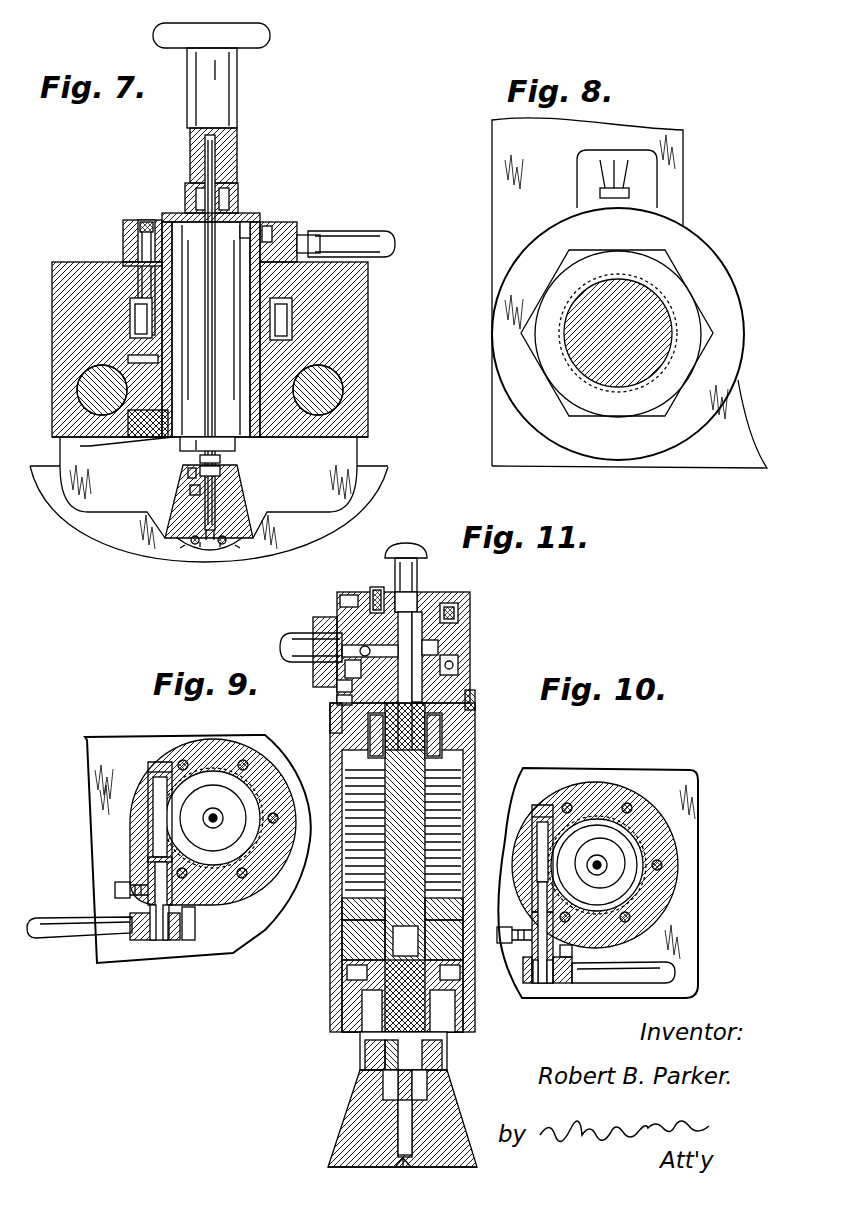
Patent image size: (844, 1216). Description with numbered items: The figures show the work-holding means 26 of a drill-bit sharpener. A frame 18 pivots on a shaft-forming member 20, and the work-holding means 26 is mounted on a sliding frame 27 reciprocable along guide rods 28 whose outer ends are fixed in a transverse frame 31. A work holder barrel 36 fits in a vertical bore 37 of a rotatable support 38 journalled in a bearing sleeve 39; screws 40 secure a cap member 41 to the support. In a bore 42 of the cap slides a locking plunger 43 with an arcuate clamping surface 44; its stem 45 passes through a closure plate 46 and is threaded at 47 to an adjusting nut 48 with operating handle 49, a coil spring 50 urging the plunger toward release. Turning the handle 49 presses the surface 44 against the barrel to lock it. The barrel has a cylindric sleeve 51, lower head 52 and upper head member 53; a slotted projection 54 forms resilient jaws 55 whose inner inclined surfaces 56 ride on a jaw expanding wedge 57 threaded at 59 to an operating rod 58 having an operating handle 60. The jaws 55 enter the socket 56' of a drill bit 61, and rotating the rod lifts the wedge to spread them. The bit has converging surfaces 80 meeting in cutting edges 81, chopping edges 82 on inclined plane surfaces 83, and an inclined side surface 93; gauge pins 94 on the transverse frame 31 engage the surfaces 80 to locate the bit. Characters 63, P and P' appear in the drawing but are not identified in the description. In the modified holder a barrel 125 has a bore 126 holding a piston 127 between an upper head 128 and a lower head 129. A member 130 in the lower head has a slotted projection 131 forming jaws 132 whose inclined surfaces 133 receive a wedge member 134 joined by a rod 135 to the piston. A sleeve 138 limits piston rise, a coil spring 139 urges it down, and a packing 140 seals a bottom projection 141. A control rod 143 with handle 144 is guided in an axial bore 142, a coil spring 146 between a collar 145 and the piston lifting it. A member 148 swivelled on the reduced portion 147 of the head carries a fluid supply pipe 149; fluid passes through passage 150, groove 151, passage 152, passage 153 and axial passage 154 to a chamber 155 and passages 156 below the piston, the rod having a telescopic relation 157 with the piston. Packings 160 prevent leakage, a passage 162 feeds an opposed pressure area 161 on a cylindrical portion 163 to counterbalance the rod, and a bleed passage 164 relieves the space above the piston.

In FIG. 8, the frame 18 is at (693, 445).
In FIG. 8, the shaft-forming member 20 is at (650, 287).
In FIG. 7, the work-holding means 26 is at (288, 222).
In FIG. 9, the work-holding means 26 is at (122, 787).
In FIG. 10, the work-holding means 26 is at (656, 786).
In FIG. 7, the sliding frame 27 is at (368, 281).
In FIG. 9, the sliding frame 27 is at (92, 820).
In FIG. 10, the sliding frame 27 is at (682, 907).
In FIG. 7, the guide rods 28 is at (87, 388).
In FIG. 7, the transverse frame 31 is at (347, 464).
In FIG. 7, the work holder barrel 36 is at (294, 214).
In FIG. 9, the work holder barrel 36 is at (160, 842).
In FIG. 10, the work holder barrel 36 is at (553, 847).
In FIG. 7, the vertical bore 37 is at (318, 238).
In FIG. 7, the rotatable support 38 is at (138, 382).
In FIG. 7, the bearing sleeve 39 is at (150, 410).
In FIG. 7, the screws 40 is at (148, 222).
In FIG. 9, the screws 40 is at (167, 773).
In FIG. 10, the screws 40 is at (552, 870).
In FIG. 7, the cap member 41 is at (125, 238).
In FIG. 9, the cap member 41 is at (163, 757).
In FIG. 10, the cap member 41 is at (677, 817).
In FIG. 9, the bore 42 is at (148, 805).
In FIG. 10, the bore 42 is at (550, 817).
In FIG. 7, the locking clamp or plunger 43 is at (277, 240).
In FIG. 9, the locking clamp or plunger 43 is at (153, 828).
In FIG. 10, the locking clamp or plunger 43 is at (573, 813).
In FIG. 7, the arcuate clamping surface 44 is at (255, 216).
In FIG. 9, the arcuate clamping surface 44 is at (160, 800).
In FIG. 10, the arcuate clamping surface 44 is at (558, 840).
In FIG. 9, the stem 45 is at (153, 925).
In FIG. 10, the stem 45 is at (558, 990).
In FIG. 9, the closure plate 46 is at (135, 938).
In FIG. 10, the closure plate 46 is at (580, 985).
In FIG. 9, the threaded connection 47 is at (167, 940).
In FIG. 10, the threaded connection 47 is at (547, 993).
In FIG. 9, the adjusting nut 48 is at (177, 941).
In FIG. 10, the adjusting nut 48 is at (535, 990).
In FIG. 7, the operating handle 49 is at (388, 234).
In FIG. 9, the operating handle 49 is at (57, 938).
In FIG. 10, the operating handle 49 is at (675, 970).
In FIG. 9, the coil spring 50 is at (127, 873).
In FIG. 10, the coil spring 50 is at (517, 937).
In FIG. 7, the cylindric sleeve 51 is at (118, 451).
In FIG. 7, the lower head 52 is at (187, 440).
In FIG. 9, the lower head 52 is at (223, 855).
In FIG. 10, the lower head 52 is at (640, 840).
In FIG. 7, the upper head member 53 is at (220, 243).
In FIG. 7, the slotted projection 54 is at (223, 453).
In FIG. 7, the resilient jaws 55 is at (225, 475).
In FIG. 7, the inner inclined surfaces 56 is at (177, 455).
In FIG. 7, the socket 56' is at (165, 478).
In FIG. 7, the jaw expanding wedge 57 is at (190, 493).
In FIG. 7, the operating rod 58 is at (228, 225).
In FIG. 9, the operating rod 58 is at (213, 813).
In FIG. 10, the operating rod 58 is at (600, 868).
In FIG. 7, the threaded connection 59 is at (213, 541).
In FIG. 7, the operating handle 60 is at (237, 86).
In FIG. 7, the drill bit 61 is at (217, 503).
In FIG. 11, the drill bit 61 is at (417, 1120).
In FIG. 8, the pointer tab 63 is at (677, 187).
In FIG. 7, the converging surfaces 80 is at (207, 541).
In FIG. 11, the converging surfaces 80 is at (412, 1150).
In FIG. 7, the cutting edges 81 is at (212, 543).
In FIG. 11, the cutting edges 81 is at (397, 1148).
In FIG. 7, the chopping edges 82 is at (177, 540).
In FIG. 11, the chopping edges 82 is at (383, 1147).
In FIG. 7, the inclined plane surfaces 83 is at (187, 544).
In FIG. 7, the inclined side surface 93 is at (253, 537).
In FIG. 7, the gauge pins 94 is at (200, 541).
In FIG. 8, the pointer P is at (664, 162).
In FIG. 8, the scale P' is at (643, 133).
In FIG. 11, the barrel 125 is at (475, 733).
In FIG. 11, the bore 126 is at (336, 762).
In FIG. 11, the piston 127 is at (347, 921).
In FIG. 11, the upper head 128 is at (457, 673).
In FIG. 11, the lower head 129 is at (360, 1043).
In FIG. 11, the member 130 is at (370, 1058).
In FIG. 11, the slotted projection 131 is at (447, 1060).
In FIG. 11, the resilient jaws 132 is at (387, 1087).
In FIG. 11, the inner inclined surfaces 133 is at (447, 1110).
In FIG. 11, the wedge member 134 is at (400, 1110).
In FIG. 11, the rod 135 is at (377, 1073).
In FIG. 11, the sleeve 138 is at (475, 767).
In FIG. 11, the coil spring 139 is at (475, 800).
In FIG. 11, the packing 140 is at (337, 988).
In FIG. 11, the bottom projection 141 is at (340, 1008).
In FIG. 11, the axial bore 142 is at (447, 607).
In FIG. 11, the control rod 143 is at (318, 670).
In FIG. 11, the operating handle 144 is at (417, 550).
In FIG. 11, the collar 145 is at (475, 694).
In FIG. 11, the coil spring 146 is at (332, 740).
In FIG. 11, the upper cylindrical reduced portion 147 is at (467, 636).
In FIG. 11, the member 148 is at (338, 600).
In FIG. 11, the fluid supply pipe 149 is at (313, 630).
In FIG. 11, the passage 150 is at (364, 592).
In FIG. 11, the groove 151 is at (460, 618).
In FIG. 11, the passage 152 is at (373, 587).
In FIG. 11, the passage 153 is at (417, 600).
In FIG. 11, the axial passage 154 is at (363, 868).
In FIG. 11, the chamber 155 is at (330, 948).
In FIG. 11, the passages 156 is at (335, 968).
In FIG. 11, the telescopic relation 157 is at (360, 893).
In FIG. 11, the packings 160 is at (470, 605).
In FIG. 11, the opposed pressure area 161 is at (333, 707).
In FIG. 11, the passage 162 is at (337, 697).
In FIG. 11, the cylindrical portion 163 is at (465, 651).
In FIG. 11, the bleed passage 164 is at (332, 722).